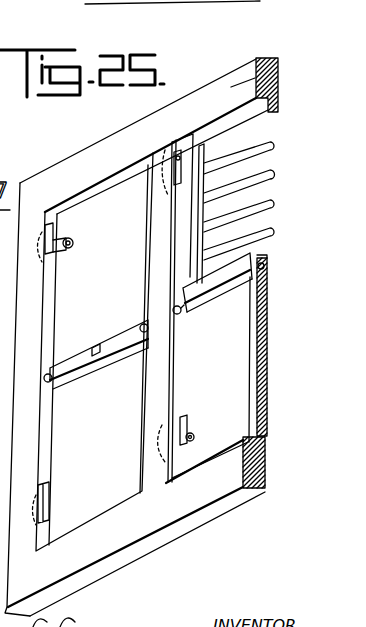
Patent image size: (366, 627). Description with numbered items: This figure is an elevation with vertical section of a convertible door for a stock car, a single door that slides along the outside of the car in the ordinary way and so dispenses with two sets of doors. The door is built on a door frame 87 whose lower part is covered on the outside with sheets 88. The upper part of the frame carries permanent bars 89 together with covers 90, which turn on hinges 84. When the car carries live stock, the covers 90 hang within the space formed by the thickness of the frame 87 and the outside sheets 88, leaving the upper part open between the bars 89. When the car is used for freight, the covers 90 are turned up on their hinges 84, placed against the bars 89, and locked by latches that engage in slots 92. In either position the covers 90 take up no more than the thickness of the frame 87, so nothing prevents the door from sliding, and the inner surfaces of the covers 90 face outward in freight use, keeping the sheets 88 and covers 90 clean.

The door frame 87 is at (272, 62).
The sheets 88 is at (297, 385).
The permanent bars 89 is at (273, 202).
The covers 90 is at (94, 352).
The slots 92 is at (53, 232).
The hinges 84 is at (101, 357).